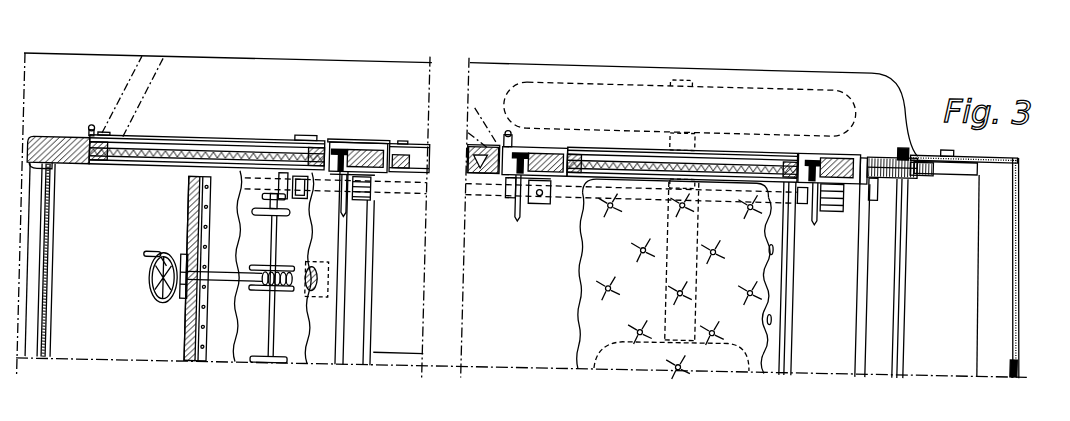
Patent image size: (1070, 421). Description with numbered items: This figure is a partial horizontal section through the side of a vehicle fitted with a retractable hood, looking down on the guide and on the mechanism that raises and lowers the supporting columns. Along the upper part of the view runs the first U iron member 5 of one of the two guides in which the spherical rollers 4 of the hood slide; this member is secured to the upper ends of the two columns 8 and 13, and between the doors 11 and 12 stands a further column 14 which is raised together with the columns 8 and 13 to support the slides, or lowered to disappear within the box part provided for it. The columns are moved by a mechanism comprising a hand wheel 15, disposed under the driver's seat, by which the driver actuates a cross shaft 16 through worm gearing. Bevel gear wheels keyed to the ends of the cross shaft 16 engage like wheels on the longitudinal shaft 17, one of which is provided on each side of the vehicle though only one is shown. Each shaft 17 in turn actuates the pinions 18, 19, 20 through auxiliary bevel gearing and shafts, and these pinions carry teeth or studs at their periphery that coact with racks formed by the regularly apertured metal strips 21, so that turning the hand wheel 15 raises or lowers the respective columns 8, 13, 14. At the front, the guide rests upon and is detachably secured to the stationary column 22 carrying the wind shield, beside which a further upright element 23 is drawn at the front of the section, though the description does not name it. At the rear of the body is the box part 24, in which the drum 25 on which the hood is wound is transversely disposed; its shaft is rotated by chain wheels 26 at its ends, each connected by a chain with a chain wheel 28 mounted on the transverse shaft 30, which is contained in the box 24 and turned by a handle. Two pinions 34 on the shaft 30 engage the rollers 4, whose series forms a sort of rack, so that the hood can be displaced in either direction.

The spherical rollers 4 is at (879, 193).
The U iron member 5 is at (871, 138).
The column 8 is at (841, 138).
The door 11 is at (415, 151).
The door 12 is at (226, 146).
The column 13 is at (550, 136).
The column 14 is at (398, 112).
The hand wheel 15 is at (156, 295).
The cross shaft 16 is at (276, 242).
The longitudinal shaft 17 is at (471, 187).
The pinion 18 is at (819, 196).
The pinion 19 is at (522, 195).
The pinion 20 is at (346, 174).
The metal strip 21 is at (343, 148).
The stationary column 22 is at (74, 132).
The post 23 is at (57, 249).
The box part 24 is at (1030, 191).
The drum 25 is at (961, 254).
The chain wheel 26 is at (969, 143).
The chain wheel 28 is at (940, 130).
The transverse shaft 30 is at (904, 251).
The pinion 34 is at (919, 153).